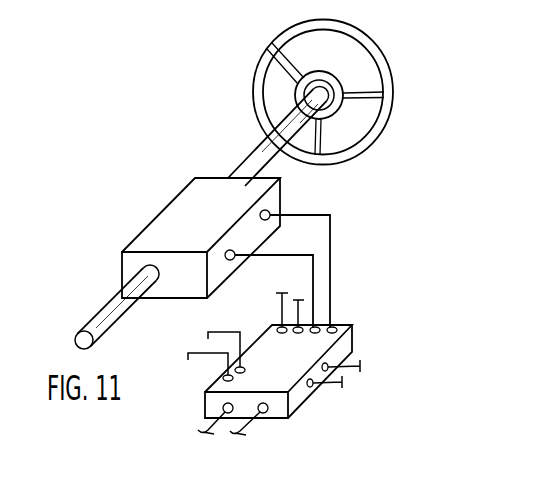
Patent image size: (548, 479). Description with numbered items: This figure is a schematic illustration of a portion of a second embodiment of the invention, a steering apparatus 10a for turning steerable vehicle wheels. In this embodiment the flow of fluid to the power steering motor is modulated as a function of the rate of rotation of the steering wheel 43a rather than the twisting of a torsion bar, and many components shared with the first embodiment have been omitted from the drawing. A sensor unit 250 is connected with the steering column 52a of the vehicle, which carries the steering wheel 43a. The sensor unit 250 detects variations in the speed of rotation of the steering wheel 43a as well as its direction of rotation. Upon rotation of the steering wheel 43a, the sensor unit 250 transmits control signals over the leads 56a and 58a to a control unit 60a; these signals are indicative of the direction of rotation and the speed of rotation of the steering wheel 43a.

The steering apparatus 10a is at (150, 126).
The steering wheel 43a is at (262, 50).
The steering column 52a is at (258, 146).
The sensor unit 250 is at (178, 215).
The lead 56a is at (280, 256).
The lead 58a is at (331, 242).
The control unit 60a is at (210, 383).